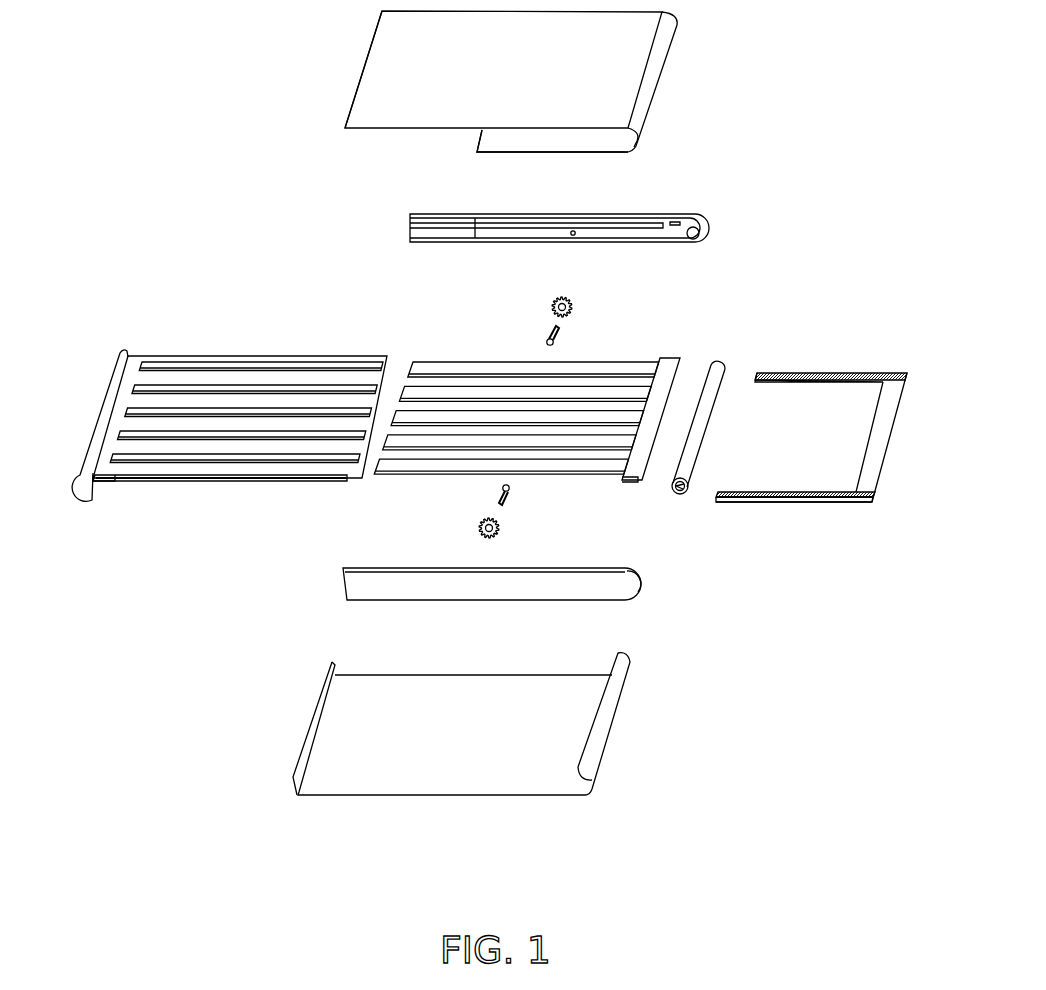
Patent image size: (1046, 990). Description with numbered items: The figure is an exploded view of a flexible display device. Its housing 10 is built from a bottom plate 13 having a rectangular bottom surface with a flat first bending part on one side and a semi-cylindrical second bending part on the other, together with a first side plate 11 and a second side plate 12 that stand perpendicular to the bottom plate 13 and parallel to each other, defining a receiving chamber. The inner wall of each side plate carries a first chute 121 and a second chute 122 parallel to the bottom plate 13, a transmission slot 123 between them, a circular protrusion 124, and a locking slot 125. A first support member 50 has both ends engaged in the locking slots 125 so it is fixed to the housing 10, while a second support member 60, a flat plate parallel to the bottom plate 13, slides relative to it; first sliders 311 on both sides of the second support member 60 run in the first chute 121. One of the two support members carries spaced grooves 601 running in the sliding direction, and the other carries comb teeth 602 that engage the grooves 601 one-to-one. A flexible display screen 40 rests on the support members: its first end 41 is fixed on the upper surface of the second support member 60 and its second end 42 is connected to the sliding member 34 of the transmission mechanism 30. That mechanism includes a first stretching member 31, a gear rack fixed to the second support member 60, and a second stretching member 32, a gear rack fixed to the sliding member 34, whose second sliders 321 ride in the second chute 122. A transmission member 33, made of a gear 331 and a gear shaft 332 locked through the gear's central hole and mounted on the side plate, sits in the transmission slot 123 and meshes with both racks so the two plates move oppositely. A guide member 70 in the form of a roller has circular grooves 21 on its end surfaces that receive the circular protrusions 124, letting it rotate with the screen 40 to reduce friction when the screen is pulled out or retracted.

The housing 10 is at (523, 502).
The first side plate 11 is at (358, 598).
The second side plate 12 is at (559, 208).
The first chute 121 is at (517, 223).
The second chute 122 is at (475, 238).
The transmission slot 123 is at (573, 231).
The circular protrusion 124 is at (699, 233).
The locking slot 125 is at (678, 221).
The bottom plate 13 is at (445, 796).
The circular groove 21 is at (678, 499).
The transmission mechanism 30 is at (519, 526).
The first stretching member 31 is at (231, 481).
The first slider 311 is at (113, 481).
The second stretching member 32 is at (805, 373).
The second slider 321 is at (816, 503).
The transmission member 33 is at (613, 526).
The gear 331 is at (552, 305).
The gear shaft 332 is at (547, 341).
The sliding member 34 is at (887, 412).
The flexible display screen 40 is at (620, 85).
The first end 41 is at (357, 90).
The second end 42 is at (478, 140).
The first support member 50 is at (668, 358).
The second support member 60 is at (221, 410).
The grooves 601 is at (185, 365).
The comb teeth 602 is at (436, 368).
The guide member 70 is at (720, 370).